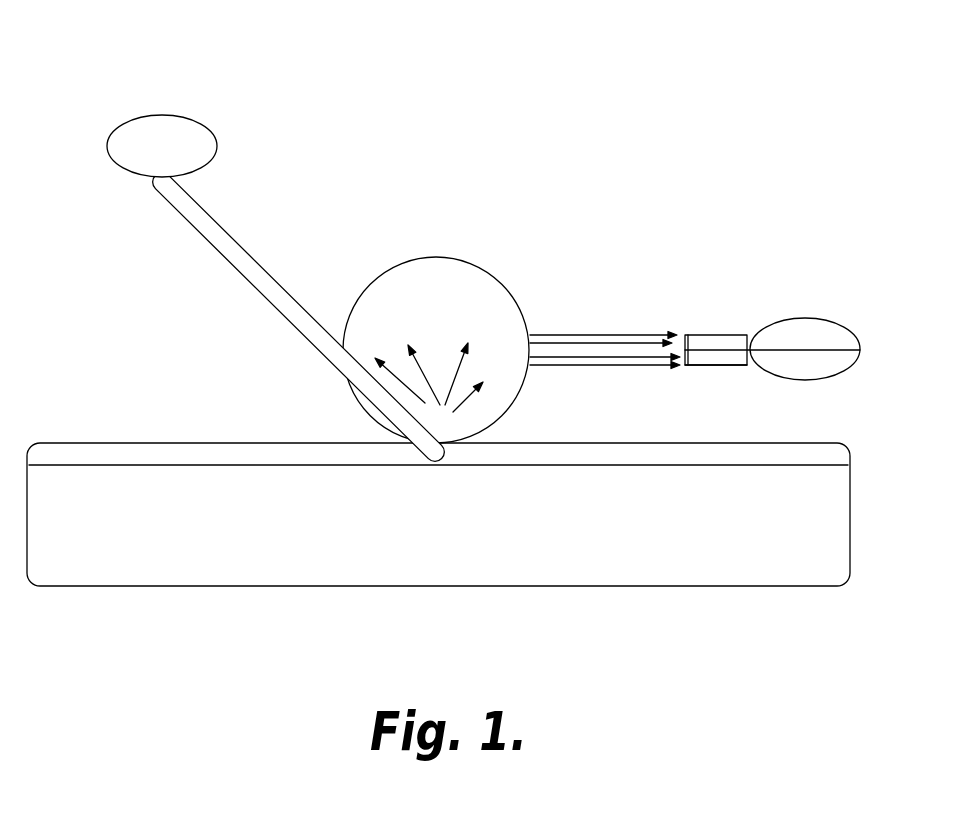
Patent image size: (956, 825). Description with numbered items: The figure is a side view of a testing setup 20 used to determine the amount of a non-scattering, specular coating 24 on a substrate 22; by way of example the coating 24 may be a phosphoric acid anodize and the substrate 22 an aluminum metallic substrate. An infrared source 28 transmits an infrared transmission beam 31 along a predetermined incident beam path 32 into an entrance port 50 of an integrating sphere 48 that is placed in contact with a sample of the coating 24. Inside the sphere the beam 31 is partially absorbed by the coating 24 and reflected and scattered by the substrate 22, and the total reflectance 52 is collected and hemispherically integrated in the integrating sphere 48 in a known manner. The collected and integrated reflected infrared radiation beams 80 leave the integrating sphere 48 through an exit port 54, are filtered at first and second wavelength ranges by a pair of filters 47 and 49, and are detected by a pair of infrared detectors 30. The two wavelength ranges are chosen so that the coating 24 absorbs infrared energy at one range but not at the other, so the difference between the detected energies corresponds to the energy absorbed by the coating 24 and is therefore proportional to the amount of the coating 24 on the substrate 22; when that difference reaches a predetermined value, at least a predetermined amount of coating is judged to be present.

The testing setup 20 is at (362, 94).
The substrate 22 is at (127, 587).
The coating 24 is at (98, 443).
The infrared source 28 is at (205, 123).
The infrared detectors 30 is at (837, 322).
The infrared transmission beam 31 is at (197, 242).
The incident beam path 32 is at (214, 304).
The filter 47 is at (722, 333).
The integrating sphere 48 is at (492, 270).
The filter 49 is at (720, 367).
The entrance port 50 is at (340, 385).
The total reflectance 52 is at (482, 403).
The exit port 54 is at (533, 333).
The collected total reflectance beams 80 is at (638, 318).